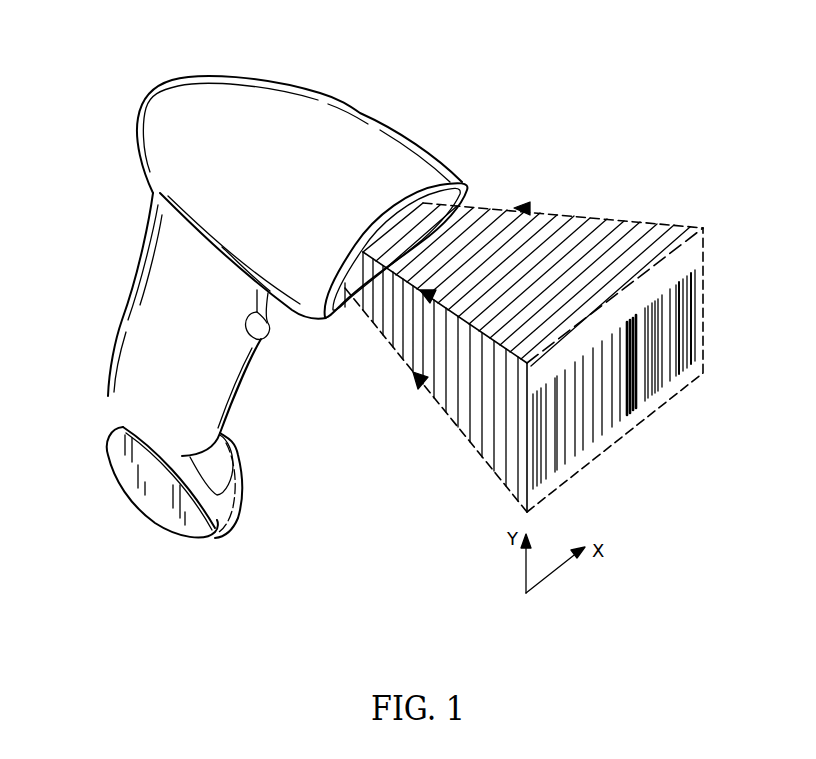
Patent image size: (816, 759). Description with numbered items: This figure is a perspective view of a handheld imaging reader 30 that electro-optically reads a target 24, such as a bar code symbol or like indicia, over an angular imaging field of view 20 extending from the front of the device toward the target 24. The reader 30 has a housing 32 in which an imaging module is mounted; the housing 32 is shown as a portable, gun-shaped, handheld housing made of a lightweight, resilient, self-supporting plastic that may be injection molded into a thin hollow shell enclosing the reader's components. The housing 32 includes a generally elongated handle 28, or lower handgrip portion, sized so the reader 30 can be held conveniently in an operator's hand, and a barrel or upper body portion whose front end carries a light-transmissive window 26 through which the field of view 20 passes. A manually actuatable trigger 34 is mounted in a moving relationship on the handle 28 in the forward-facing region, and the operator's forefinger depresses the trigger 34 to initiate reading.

The imaging field of view 20 is at (608, 232).
The target 24 is at (700, 300).
The light-transmissive window 26 is at (346, 308).
The handle 28 is at (112, 338).
The handheld imaging reader 30 is at (92, 270).
The housing 32 is at (279, 96).
The trigger 34 is at (288, 318).